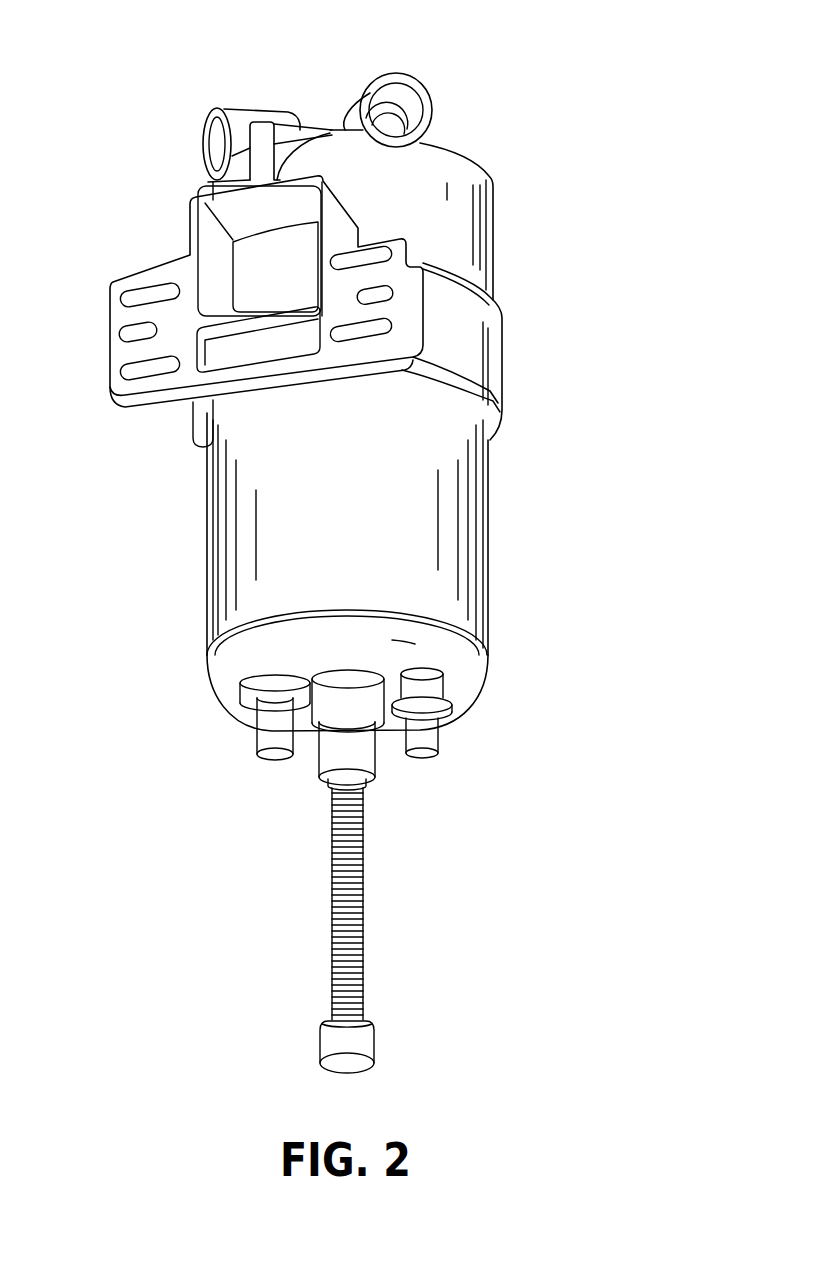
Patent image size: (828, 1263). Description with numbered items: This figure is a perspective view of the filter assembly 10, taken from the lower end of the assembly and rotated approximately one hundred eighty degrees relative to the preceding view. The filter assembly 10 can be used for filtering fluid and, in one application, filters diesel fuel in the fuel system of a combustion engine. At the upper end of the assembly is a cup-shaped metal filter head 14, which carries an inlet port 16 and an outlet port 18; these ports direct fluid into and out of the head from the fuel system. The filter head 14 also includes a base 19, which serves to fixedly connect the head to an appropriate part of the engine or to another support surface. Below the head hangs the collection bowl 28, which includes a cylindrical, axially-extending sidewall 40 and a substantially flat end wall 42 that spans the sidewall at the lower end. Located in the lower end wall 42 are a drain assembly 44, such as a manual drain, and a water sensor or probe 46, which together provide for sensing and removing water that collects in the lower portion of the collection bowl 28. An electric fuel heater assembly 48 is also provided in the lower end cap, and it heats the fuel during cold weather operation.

The filter assembly 10 is at (520, 150).
The filter head 14 is at (468, 230).
The inlet port 16 is at (230, 112).
The outlet port 18 is at (405, 80).
The base 19 is at (118, 397).
The collection bowl 28 is at (453, 488).
The sidewall 40 is at (487, 585).
The end wall 42 is at (465, 690).
The drain assembly 44 is at (420, 755).
The water sensor or probe 46 is at (363, 957).
The electric fuel heater assembly 48 is at (255, 723).